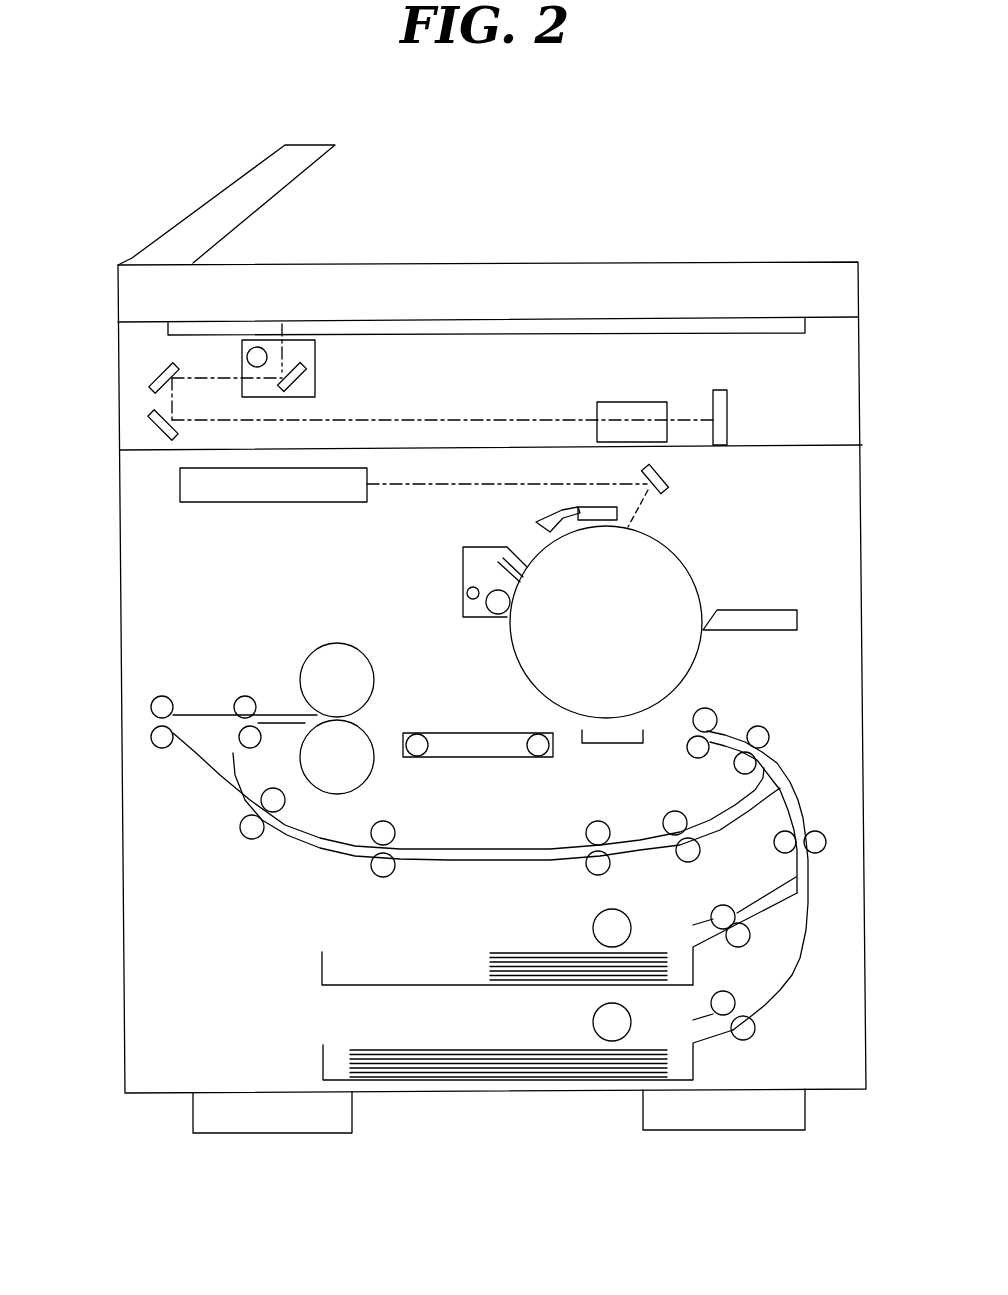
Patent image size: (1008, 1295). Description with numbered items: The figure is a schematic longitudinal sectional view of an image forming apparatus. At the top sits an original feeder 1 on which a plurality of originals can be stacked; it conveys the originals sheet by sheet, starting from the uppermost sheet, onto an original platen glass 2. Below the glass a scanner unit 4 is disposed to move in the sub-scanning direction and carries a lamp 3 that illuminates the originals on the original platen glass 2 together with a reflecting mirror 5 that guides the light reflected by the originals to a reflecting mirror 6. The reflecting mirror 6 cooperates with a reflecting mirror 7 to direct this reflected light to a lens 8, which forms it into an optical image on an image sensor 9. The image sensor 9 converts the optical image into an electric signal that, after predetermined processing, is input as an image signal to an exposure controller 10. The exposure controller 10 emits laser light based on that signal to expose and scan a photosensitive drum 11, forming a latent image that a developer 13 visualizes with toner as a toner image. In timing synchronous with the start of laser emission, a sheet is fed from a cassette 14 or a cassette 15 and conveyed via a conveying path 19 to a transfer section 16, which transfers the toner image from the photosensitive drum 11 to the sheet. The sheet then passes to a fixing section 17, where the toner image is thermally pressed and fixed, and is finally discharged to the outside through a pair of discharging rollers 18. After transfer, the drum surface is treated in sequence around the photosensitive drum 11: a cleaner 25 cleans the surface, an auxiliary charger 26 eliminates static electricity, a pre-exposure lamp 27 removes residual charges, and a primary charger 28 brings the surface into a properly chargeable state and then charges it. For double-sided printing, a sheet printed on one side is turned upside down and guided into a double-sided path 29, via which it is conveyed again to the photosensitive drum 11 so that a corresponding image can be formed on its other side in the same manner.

The original feeder 1 is at (310, 165).
The original platen glass 2 is at (415, 322).
The lamp 3 is at (258, 347).
The scanner unit 4 is at (315, 350).
The reflecting mirror 5 is at (302, 385).
The reflecting mirror 6 is at (150, 372).
The reflecting mirror 7 is at (150, 425).
The lens 8 is at (637, 402).
The image sensor 9 is at (728, 415).
The exposure controller 10 is at (207, 502).
The photosensitive drum 11 is at (693, 570).
The developer 13 is at (760, 630).
The cassette 14 is at (322, 968).
The cassette 15 is at (322, 1061).
The transfer section 16 is at (608, 745).
The fixing section 17 is at (378, 672).
The pair of discharging rollers 18 is at (150, 737).
The conveying path 19 is at (803, 800).
The cleaner 25 is at (463, 582).
The auxiliary charger 26 is at (538, 525).
The pre-exposure lamp 27 is at (570, 510).
The primary charger 28 is at (632, 510).
The double-sided path 29 is at (462, 842).